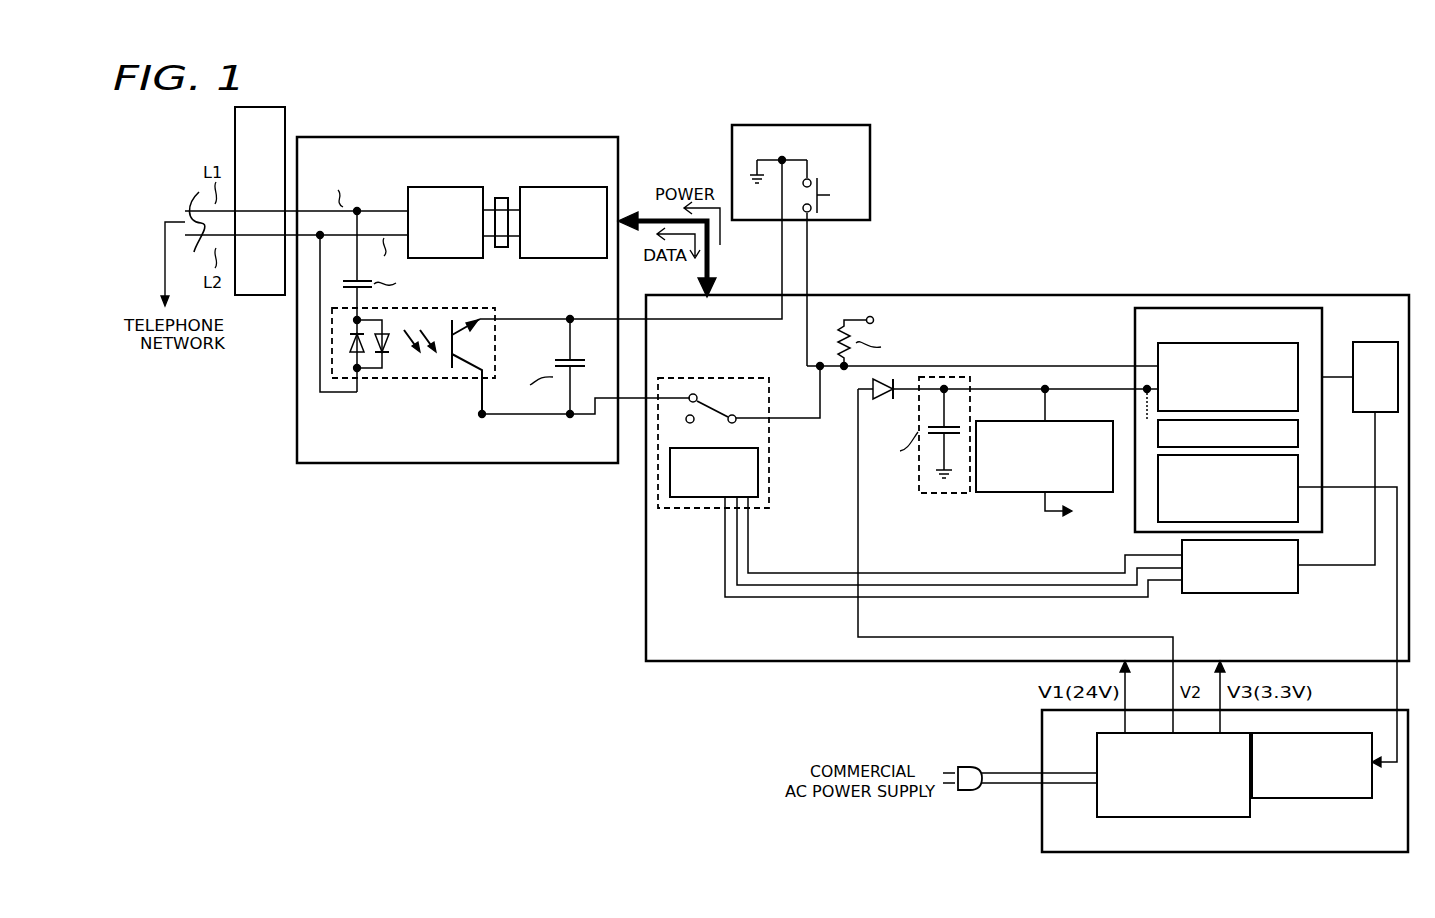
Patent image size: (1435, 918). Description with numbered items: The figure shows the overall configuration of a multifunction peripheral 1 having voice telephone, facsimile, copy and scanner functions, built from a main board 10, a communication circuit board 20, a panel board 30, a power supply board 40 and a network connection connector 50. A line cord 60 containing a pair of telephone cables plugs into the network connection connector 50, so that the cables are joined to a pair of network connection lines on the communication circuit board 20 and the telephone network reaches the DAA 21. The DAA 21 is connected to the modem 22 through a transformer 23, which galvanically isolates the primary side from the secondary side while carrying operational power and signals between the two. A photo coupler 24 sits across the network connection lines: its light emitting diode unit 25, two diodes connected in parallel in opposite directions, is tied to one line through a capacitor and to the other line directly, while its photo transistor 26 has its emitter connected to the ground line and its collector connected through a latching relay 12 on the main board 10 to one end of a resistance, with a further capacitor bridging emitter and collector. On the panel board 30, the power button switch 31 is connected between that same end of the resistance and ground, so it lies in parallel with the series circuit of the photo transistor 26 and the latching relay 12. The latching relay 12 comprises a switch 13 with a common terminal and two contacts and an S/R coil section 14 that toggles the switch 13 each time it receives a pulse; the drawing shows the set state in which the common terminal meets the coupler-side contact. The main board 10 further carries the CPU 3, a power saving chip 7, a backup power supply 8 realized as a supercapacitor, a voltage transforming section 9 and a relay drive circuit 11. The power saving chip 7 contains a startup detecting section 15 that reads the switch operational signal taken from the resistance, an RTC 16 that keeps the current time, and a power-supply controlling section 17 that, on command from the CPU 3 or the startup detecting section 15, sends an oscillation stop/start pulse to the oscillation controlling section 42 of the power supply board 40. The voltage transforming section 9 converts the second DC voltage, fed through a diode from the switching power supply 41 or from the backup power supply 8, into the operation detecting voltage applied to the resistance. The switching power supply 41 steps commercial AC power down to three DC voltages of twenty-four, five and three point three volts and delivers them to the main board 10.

The multifunction peripheral 1 is at (1232, 166).
The CPU 3 is at (1375, 340).
The power saving chip 7 is at (1134, 322).
The backup power supply 8 is at (944, 496).
The voltage transforming section 9 is at (1073, 420).
The main board 10 is at (705, 663).
The relay drive circuit 11 is at (1240, 594).
The latching relay 12 is at (770, 480).
The switch 13 is at (708, 413).
The S/R coil section 14 is at (693, 498).
The startup detecting section 15 is at (1300, 356).
The RTC 16 is at (1298, 434).
The power-supply controlling section 17 is at (1298, 470).
The communication circuit board 20 is at (455, 464).
The DAA 21 is at (438, 188).
The modem 22 is at (563, 188).
The transformer 23 is at (502, 198).
The photo coupler 24 is at (433, 308).
The light emitting diode unit 25 is at (390, 368).
The photo transistor 26 is at (464, 320).
The panel board 30 is at (833, 245).
The power button switch 31 is at (820, 186).
The power supply board 40 is at (1042, 833).
The switching power supply 41 is at (1097, 748).
The oscillation controlling section 42 is at (1340, 799).
The network connection connector 50 is at (258, 296).
The line cord 60 is at (198, 191).